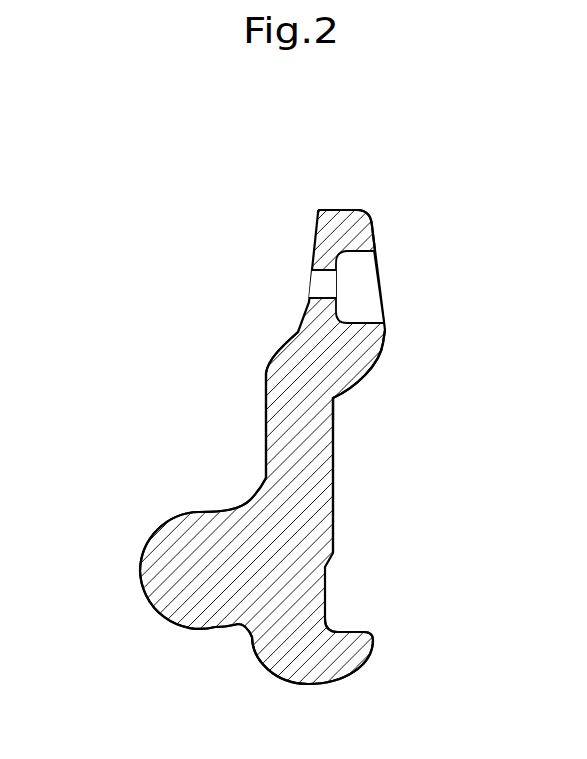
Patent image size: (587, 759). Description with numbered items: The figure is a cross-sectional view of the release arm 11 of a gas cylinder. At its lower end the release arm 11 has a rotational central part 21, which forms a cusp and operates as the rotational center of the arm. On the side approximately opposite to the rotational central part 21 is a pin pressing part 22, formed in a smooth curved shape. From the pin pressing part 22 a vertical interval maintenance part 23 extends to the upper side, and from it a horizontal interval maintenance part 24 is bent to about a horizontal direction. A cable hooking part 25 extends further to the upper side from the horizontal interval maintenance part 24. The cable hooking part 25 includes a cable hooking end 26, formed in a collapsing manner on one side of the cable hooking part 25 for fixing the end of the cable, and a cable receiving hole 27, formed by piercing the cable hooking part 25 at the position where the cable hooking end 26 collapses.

The release arm 11 is at (296, 192).
The rotational central part 21 is at (373, 643).
The pin pressing part 22 is at (167, 585).
The vertical interval maintenance part 23 is at (287, 440).
The horizontal interval maintenance part 24 is at (337, 392).
The cable hooking part 25 is at (347, 227).
The cable hooking end 26 is at (367, 285).
The cable receiving hole 27 is at (328, 281).